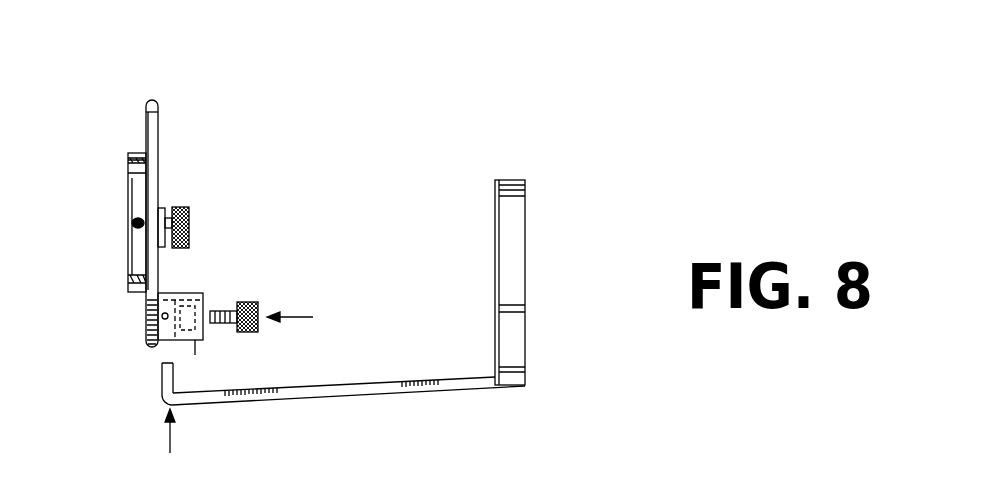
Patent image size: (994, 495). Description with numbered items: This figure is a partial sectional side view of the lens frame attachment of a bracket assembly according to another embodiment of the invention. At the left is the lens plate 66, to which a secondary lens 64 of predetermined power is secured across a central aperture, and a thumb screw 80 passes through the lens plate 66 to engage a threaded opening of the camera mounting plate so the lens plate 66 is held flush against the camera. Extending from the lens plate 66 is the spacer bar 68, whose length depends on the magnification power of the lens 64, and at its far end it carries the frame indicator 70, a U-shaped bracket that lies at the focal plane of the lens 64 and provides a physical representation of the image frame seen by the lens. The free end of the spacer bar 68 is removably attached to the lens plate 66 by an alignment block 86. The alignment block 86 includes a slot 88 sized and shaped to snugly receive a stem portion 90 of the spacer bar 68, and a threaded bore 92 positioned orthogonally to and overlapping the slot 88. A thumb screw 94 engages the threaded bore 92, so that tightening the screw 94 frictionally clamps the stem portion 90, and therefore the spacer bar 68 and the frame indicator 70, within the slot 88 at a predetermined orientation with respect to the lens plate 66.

The secondary lens 64 is at (140, 186).
The lens plate 66 is at (152, 132).
The spacer bar 68 is at (332, 401).
The frame indicator 70 is at (515, 230).
The thumb screw 80 is at (190, 219).
The alignment block 86 is at (190, 293).
The slot 88 is at (160, 316).
The stem portion 90 is at (163, 385).
The threaded bore 92 is at (195, 355).
The thumb screw 94 is at (250, 302).